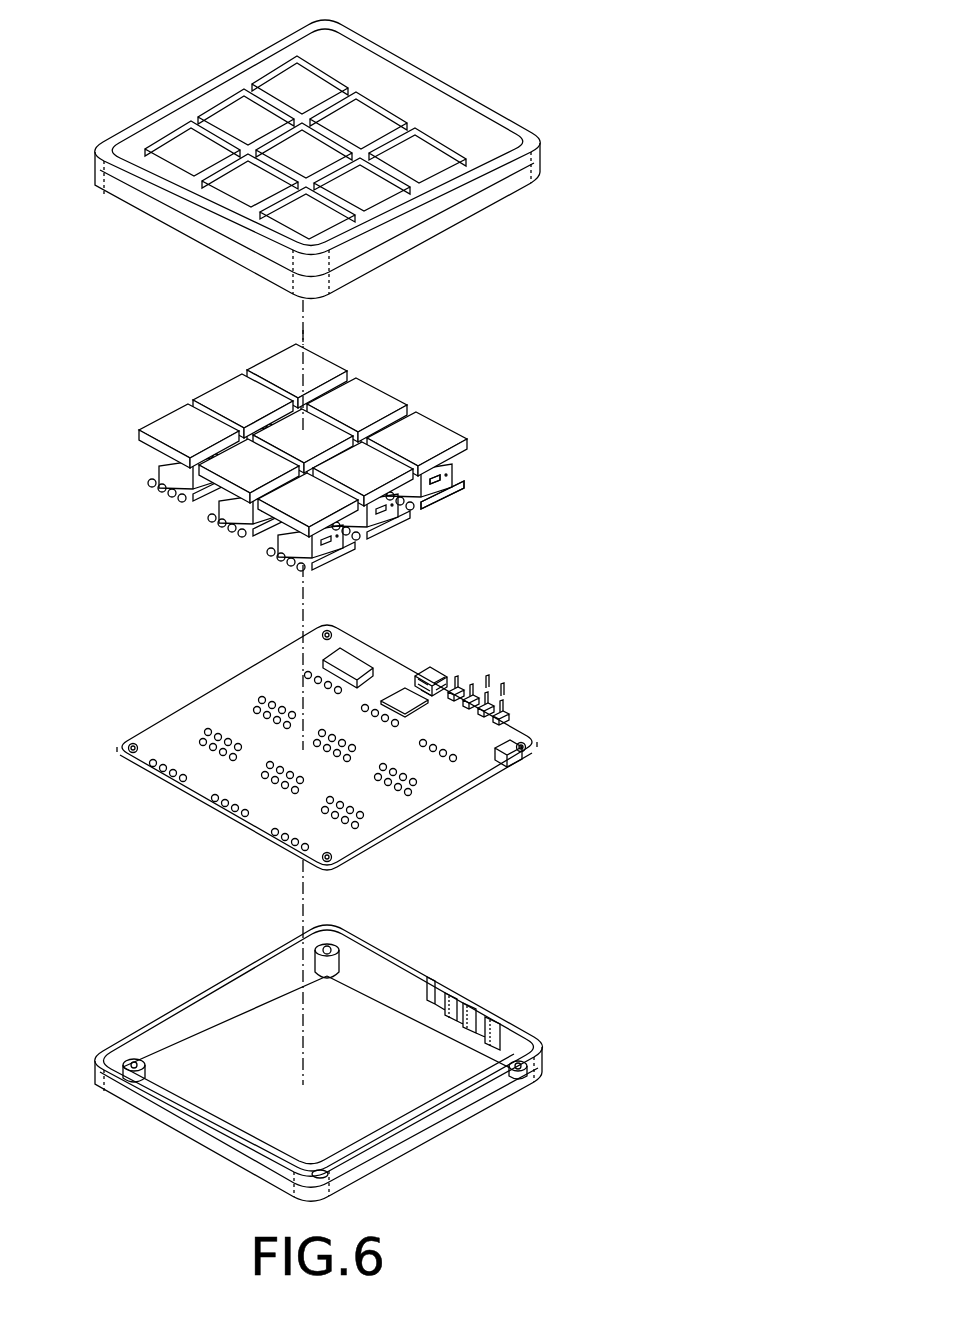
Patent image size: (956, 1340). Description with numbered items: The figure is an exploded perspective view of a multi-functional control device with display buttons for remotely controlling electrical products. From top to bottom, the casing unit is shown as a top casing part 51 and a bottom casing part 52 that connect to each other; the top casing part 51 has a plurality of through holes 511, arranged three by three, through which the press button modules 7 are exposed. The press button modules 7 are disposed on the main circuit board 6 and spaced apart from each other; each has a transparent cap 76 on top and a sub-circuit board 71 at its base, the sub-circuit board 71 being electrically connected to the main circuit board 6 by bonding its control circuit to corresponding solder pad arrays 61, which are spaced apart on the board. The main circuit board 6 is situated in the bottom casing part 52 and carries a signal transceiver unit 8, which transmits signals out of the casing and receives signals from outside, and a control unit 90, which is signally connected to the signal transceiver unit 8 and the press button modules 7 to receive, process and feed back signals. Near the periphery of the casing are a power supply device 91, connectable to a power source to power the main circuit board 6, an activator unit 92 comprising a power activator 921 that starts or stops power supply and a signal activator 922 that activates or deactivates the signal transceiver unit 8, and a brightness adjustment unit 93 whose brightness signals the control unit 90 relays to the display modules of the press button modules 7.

The top casing part 51 is at (483, 102).
The through holes 511 is at (298, 80).
The press button modules 7 is at (370, 398).
The transparent cap 76 is at (462, 452).
The sub-circuit board 71 is at (443, 500).
The main circuit board 6 is at (199, 693).
The solder pad arrays 61 is at (247, 706).
The signal transceiver unit 8 is at (345, 660).
The control unit 90 is at (403, 696).
The power supply device 91 is at (438, 667).
The activator unit 92 is at (552, 694).
The brightness adjustment unit 93 is at (463, 688).
The power activator 921 is at (553, 761).
The signal activator 922 is at (508, 704).
The bottom casing part 52 is at (190, 1010).